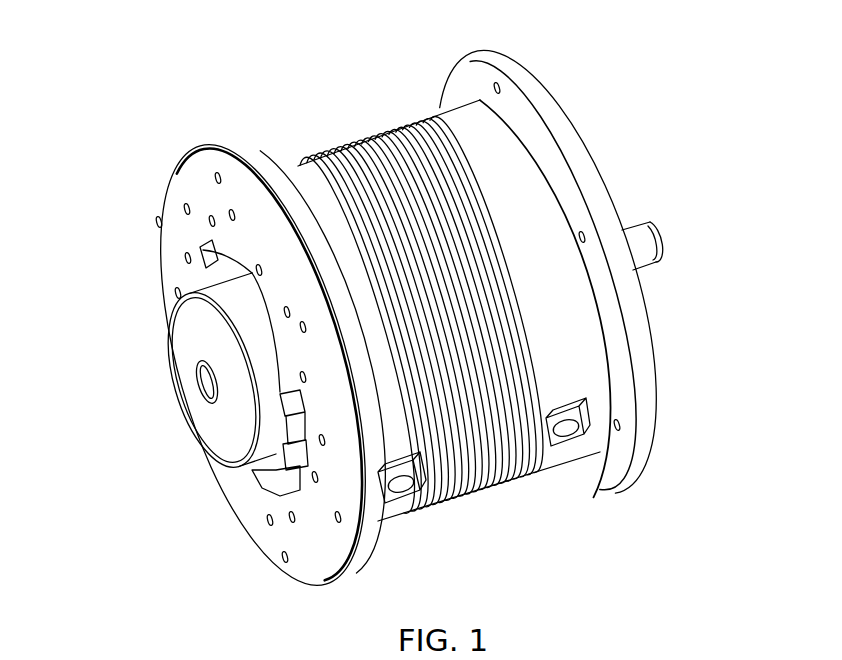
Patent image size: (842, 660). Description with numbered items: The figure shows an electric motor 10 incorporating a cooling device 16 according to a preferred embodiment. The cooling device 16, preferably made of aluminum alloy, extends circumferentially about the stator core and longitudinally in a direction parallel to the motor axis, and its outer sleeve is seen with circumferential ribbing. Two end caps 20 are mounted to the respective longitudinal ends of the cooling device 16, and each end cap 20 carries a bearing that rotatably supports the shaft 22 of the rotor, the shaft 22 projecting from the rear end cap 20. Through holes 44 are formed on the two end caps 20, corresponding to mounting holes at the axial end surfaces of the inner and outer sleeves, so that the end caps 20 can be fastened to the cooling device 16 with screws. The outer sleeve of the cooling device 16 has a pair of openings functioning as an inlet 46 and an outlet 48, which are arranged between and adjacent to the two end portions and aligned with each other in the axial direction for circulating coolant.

The electric motor 10 is at (146, 100).
The cooling device 16 is at (290, 180).
The end caps 20 is at (248, 494).
The shaft 22 is at (644, 240).
The through holes 44 is at (160, 225).
The inlet 46 is at (403, 487).
The outlet 48 is at (563, 432).